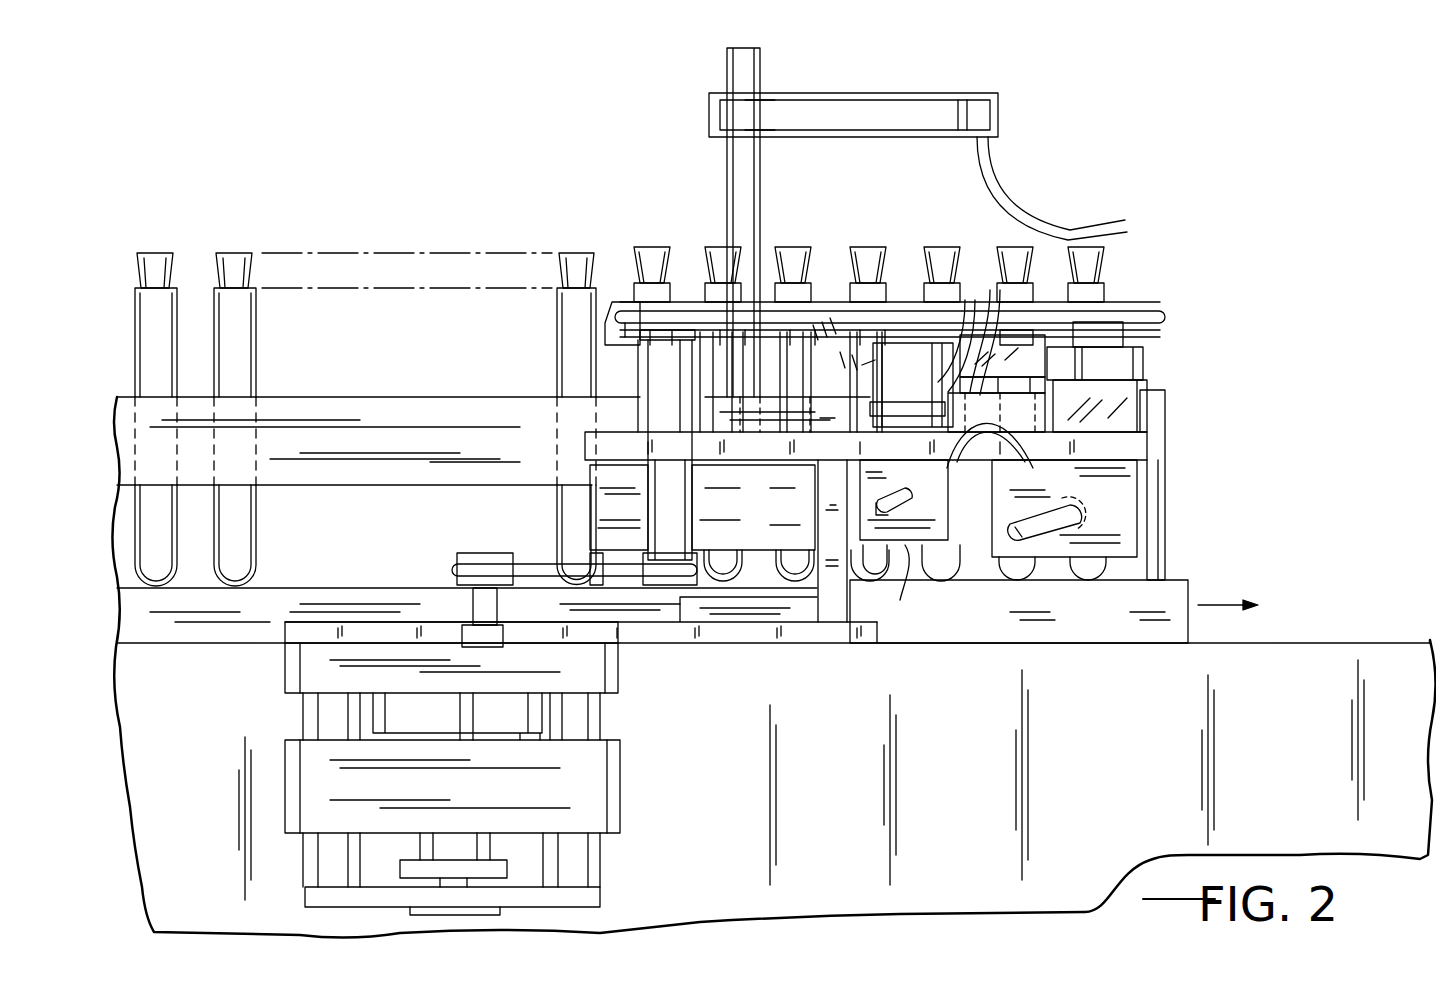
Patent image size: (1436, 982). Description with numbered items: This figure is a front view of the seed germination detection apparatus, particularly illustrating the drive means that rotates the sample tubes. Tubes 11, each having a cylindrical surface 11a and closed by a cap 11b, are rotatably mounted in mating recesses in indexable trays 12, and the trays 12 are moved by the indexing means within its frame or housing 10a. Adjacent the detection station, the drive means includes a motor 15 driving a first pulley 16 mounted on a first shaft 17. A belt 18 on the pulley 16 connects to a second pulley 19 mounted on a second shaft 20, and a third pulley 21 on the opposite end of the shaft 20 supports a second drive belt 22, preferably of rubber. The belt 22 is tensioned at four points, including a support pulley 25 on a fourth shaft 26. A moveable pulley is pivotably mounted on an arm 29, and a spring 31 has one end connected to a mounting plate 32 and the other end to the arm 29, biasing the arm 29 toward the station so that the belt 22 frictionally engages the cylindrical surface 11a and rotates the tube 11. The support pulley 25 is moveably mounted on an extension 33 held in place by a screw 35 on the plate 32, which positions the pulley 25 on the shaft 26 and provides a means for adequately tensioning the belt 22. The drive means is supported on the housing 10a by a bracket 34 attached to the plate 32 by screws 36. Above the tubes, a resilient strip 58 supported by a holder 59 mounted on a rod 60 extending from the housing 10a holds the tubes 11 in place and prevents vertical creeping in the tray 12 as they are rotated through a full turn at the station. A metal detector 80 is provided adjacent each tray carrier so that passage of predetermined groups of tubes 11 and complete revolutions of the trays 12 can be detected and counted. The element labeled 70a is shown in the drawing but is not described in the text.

The frame 10a is at (1143, 741).
The tube 11 is at (134, 340).
The cylindrical surface 11a is at (776, 281).
The cap 11b is at (864, 248).
The indexable tray 12 is at (346, 397).
The motor 15 is at (616, 782).
The first pulley 16 is at (462, 553).
The first shaft 17 is at (472, 601).
The belt 18 is at (516, 555).
The second pulley 19 is at (697, 538).
The second shaft 20 is at (663, 368).
The third pulley 21 is at (612, 299).
The second drive belt 22 is at (814, 297).
The support pulley 25 is at (1120, 296).
The fourth shaft 26 is at (1137, 334).
The arm 29 is at (920, 318).
The spring 31 is at (976, 298).
The mounting plate 32 is at (1163, 446).
The extension 33 is at (968, 462).
The bracket 34 is at (285, 686).
The screw 35 is at (1050, 420).
The screws 36 is at (713, 645).
The resilient strip 58 is at (1002, 189).
The holder 59 is at (902, 100).
The rod 60 is at (727, 198).
The platform 70a is at (1072, 568).
The metal detector 80 is at (923, 584).